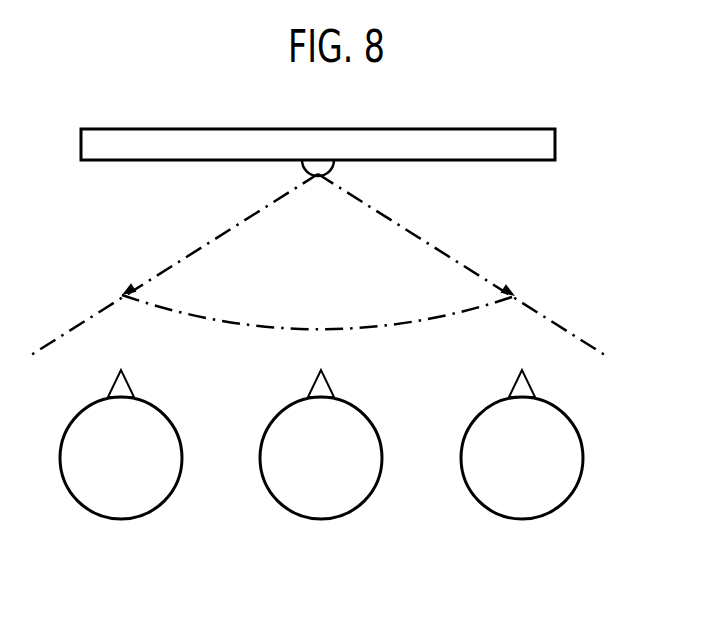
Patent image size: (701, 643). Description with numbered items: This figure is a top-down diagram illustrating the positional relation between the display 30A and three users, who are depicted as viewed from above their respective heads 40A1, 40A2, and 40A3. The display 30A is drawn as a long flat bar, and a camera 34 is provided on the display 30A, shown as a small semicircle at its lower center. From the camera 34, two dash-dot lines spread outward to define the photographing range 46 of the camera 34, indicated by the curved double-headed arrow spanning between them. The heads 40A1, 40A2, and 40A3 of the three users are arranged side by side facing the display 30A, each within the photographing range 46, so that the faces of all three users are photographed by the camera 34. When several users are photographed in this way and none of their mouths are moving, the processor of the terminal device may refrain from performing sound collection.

The display 30A is at (555, 142).
The camera 34 is at (333, 170).
The photographing range 46 is at (292, 328).
The head of user A1 40A1 is at (121, 519).
The head of user A2 40A2 is at (321, 519).
The head of user A3 40A3 is at (522, 519).